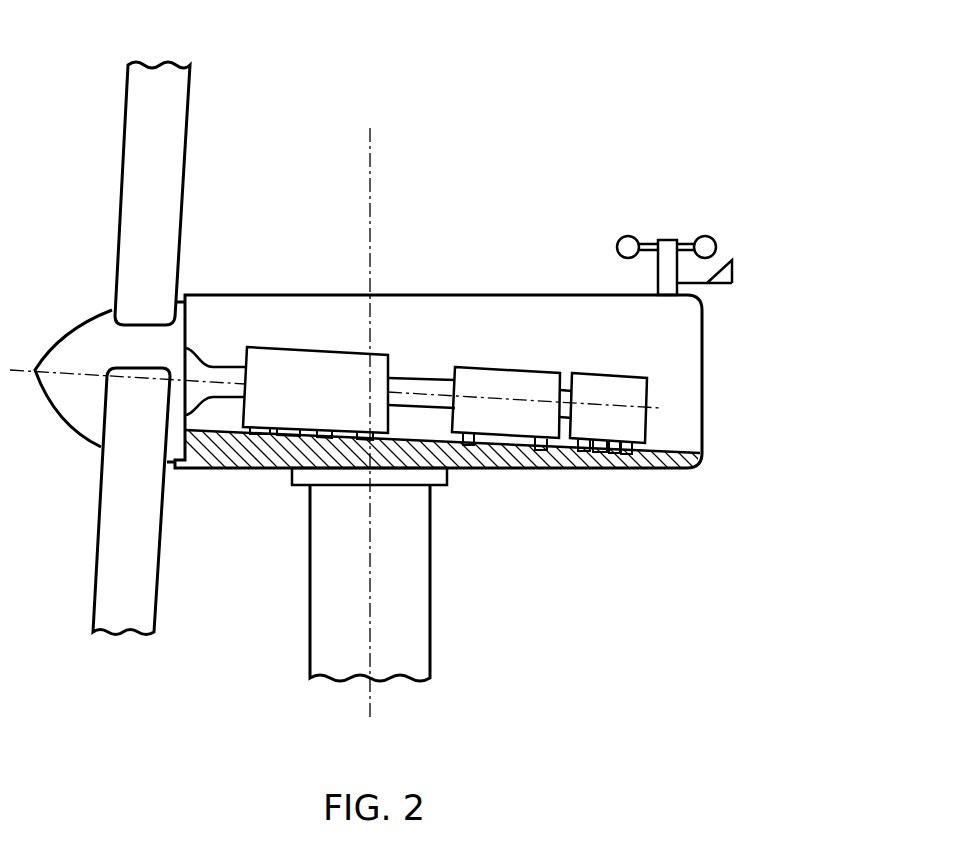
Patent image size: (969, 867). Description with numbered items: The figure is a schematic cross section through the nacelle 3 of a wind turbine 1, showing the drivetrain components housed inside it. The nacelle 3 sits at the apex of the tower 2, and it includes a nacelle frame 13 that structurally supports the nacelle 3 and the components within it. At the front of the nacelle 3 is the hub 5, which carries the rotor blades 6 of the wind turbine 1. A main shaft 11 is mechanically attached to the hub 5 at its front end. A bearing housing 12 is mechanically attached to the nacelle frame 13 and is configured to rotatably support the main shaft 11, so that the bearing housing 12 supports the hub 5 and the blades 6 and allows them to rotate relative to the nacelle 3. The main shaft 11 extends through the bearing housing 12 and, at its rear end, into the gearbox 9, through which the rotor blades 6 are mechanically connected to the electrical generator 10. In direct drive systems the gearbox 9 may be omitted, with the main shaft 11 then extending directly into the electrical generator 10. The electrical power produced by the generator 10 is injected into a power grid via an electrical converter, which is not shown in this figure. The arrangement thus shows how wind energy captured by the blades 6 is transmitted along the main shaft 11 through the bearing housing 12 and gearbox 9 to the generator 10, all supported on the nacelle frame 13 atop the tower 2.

The wind turbine 1 is at (593, 96).
The tower 2 is at (308, 640).
The nacelle 3 is at (470, 295).
The hub 5 is at (62, 345).
The rotor blades 6 is at (123, 145).
The gearbox 9 is at (497, 367).
The electrical generator 10 is at (605, 455).
The main shaft 11 is at (197, 347).
The bearing housing 12 is at (277, 347).
The nacelle frame 13 is at (270, 455).